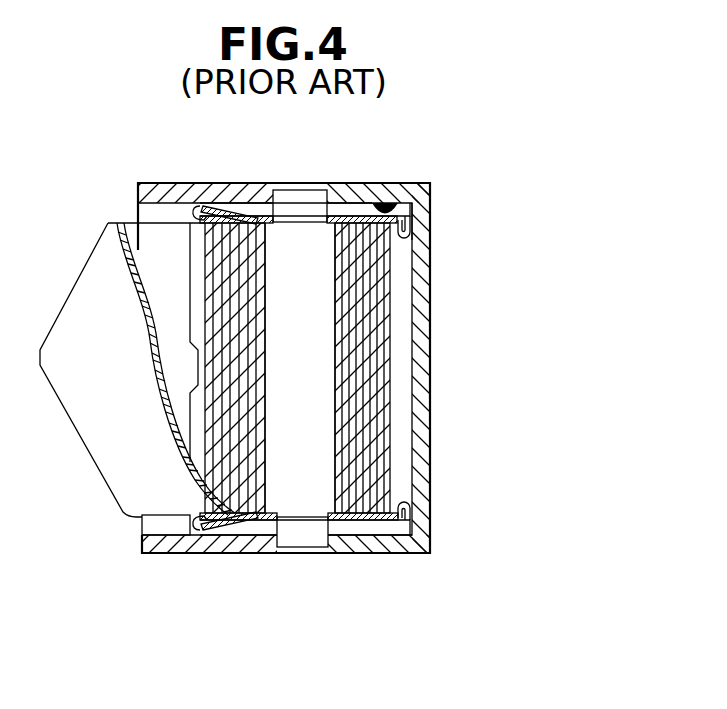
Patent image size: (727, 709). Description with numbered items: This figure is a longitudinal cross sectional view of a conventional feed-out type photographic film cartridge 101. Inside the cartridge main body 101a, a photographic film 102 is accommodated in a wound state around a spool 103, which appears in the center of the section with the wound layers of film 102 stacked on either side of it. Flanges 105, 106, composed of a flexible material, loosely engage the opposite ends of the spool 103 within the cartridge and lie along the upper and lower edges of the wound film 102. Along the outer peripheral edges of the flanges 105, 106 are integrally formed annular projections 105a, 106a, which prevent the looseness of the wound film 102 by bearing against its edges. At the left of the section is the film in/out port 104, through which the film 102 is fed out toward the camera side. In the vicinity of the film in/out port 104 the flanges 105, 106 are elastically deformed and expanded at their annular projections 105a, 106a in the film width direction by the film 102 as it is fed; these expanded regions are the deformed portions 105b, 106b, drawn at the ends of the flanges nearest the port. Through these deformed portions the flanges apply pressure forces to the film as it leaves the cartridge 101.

The cartridge 101 is at (417, 178).
The cartridge main body 101a is at (432, 190).
The photographic film 102 is at (377, 322).
The spool 103 is at (312, 405).
The film in/out port 104 is at (157, 525).
The flange 105 is at (347, 204).
The annular projection 105a is at (410, 223).
The deformed portion 105b is at (172, 205).
The flange 106 is at (381, 537).
The annular projection 106a is at (408, 512).
The deformed portion 106b is at (194, 533).